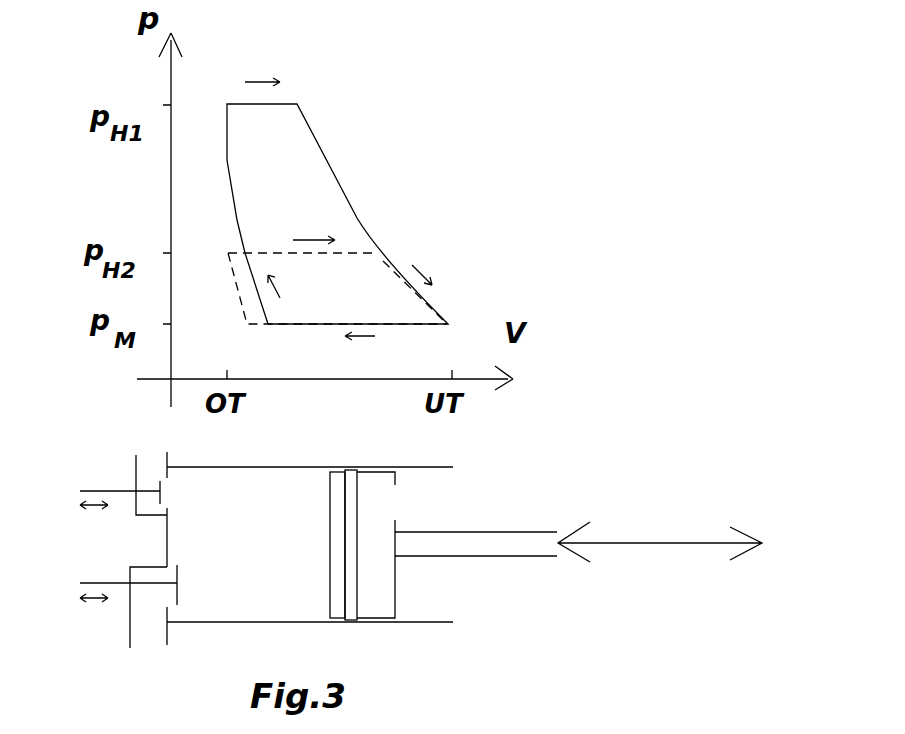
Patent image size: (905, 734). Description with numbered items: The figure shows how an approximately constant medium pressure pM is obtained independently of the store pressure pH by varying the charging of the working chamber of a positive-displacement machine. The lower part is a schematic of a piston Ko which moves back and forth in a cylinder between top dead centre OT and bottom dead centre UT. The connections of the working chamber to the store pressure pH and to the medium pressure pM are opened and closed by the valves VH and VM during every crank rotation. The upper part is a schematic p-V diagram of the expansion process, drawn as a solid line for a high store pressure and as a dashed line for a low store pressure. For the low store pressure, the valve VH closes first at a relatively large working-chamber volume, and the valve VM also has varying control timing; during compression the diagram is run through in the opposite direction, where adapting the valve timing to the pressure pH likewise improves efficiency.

The piston Ko is at (443, 545).
The store pressure pH is at (147, 452).
The medium pressure pM is at (145, 647).
The valve VH is at (61, 500).
The valve VM is at (61, 588).